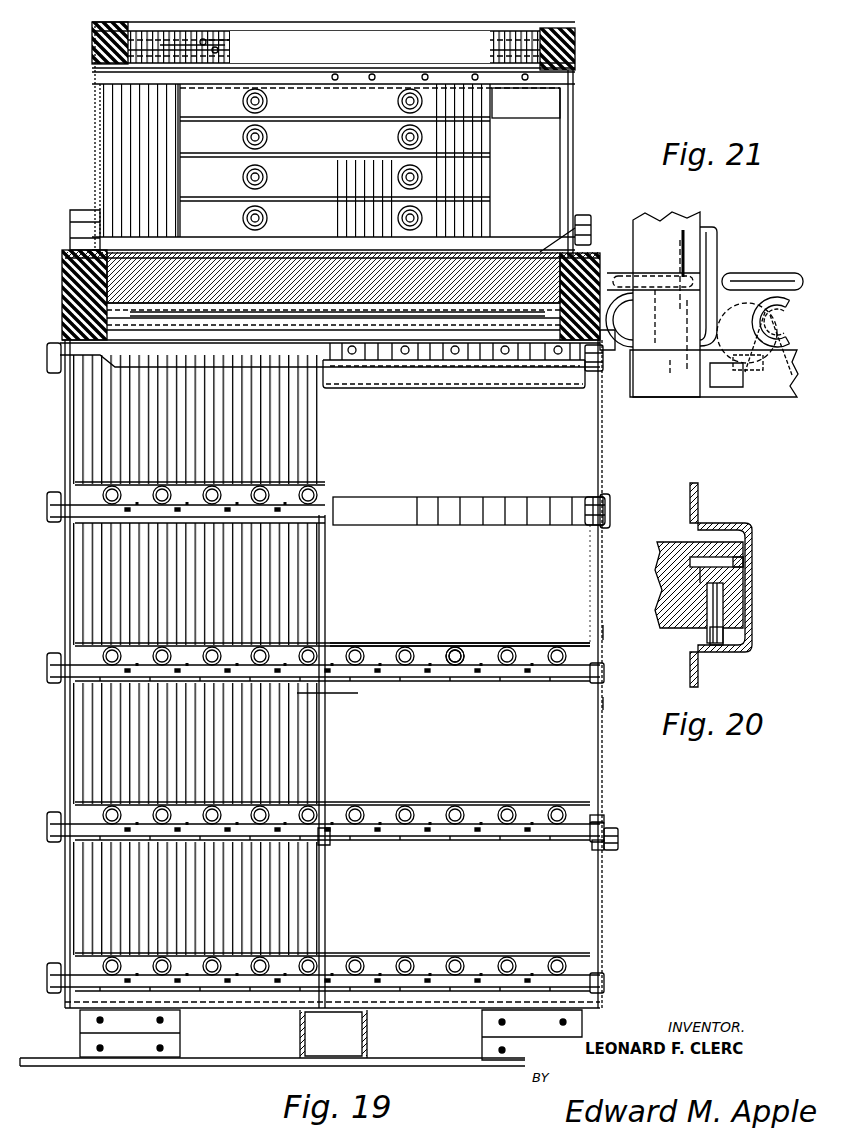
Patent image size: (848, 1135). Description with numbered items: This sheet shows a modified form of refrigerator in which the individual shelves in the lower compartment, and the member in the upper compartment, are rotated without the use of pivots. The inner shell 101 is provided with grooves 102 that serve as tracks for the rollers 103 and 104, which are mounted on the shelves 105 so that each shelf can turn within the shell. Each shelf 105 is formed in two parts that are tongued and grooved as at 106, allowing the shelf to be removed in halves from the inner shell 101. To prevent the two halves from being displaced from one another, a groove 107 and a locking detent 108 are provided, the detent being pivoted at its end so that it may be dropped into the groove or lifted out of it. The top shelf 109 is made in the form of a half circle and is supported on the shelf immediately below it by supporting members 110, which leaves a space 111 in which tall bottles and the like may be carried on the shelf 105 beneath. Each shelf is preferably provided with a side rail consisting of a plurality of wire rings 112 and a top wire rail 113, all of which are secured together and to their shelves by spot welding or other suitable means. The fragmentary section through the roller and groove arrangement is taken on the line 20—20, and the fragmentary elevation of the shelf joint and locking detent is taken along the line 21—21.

In FIG. 19, the inner shell 101 is at (600, 778).
In FIG. 19, the grooves 102 is at (583, 215).
In FIG. 20, the grooves 102 is at (752, 605).
In FIG. 19, the rollers 103 is at (606, 850).
In FIG. 20, the rollers 103 is at (725, 641).
In FIG. 19, the rollers 104 is at (606, 820).
In FIG. 20, the rollers 104 is at (748, 553).
In FIG. 19, the shelves 105 is at (488, 672).
In FIG. 20, the shelves 105 is at (733, 590).
In FIG. 19, the tongue and groove 106 is at (326, 840).
In FIG. 21, the tongue and groove 106 is at (722, 387).
In FIG. 21, the groove 107 is at (754, 372).
In FIG. 21, the locking detent 108 is at (768, 362).
In FIG. 19, the top shelf 109 is at (327, 508).
In FIG. 19, the supporting members 110 is at (325, 585).
In FIG. 21, the supporting members 110 is at (688, 227).
In FIG. 19, the space 111 is at (575, 553).
In FIG. 19, the wire rings 112 is at (460, 650).
In FIG. 21, the wire rings 112 is at (758, 312).
In FIG. 19, the top wire rail 113 is at (403, 645).
In FIG. 21, the top wire rail 113 is at (754, 283).
In FIG. 19, the section line 20— 20 is at (595, 632).
In FIG. 19, the line 21— 21 is at (357, 698).